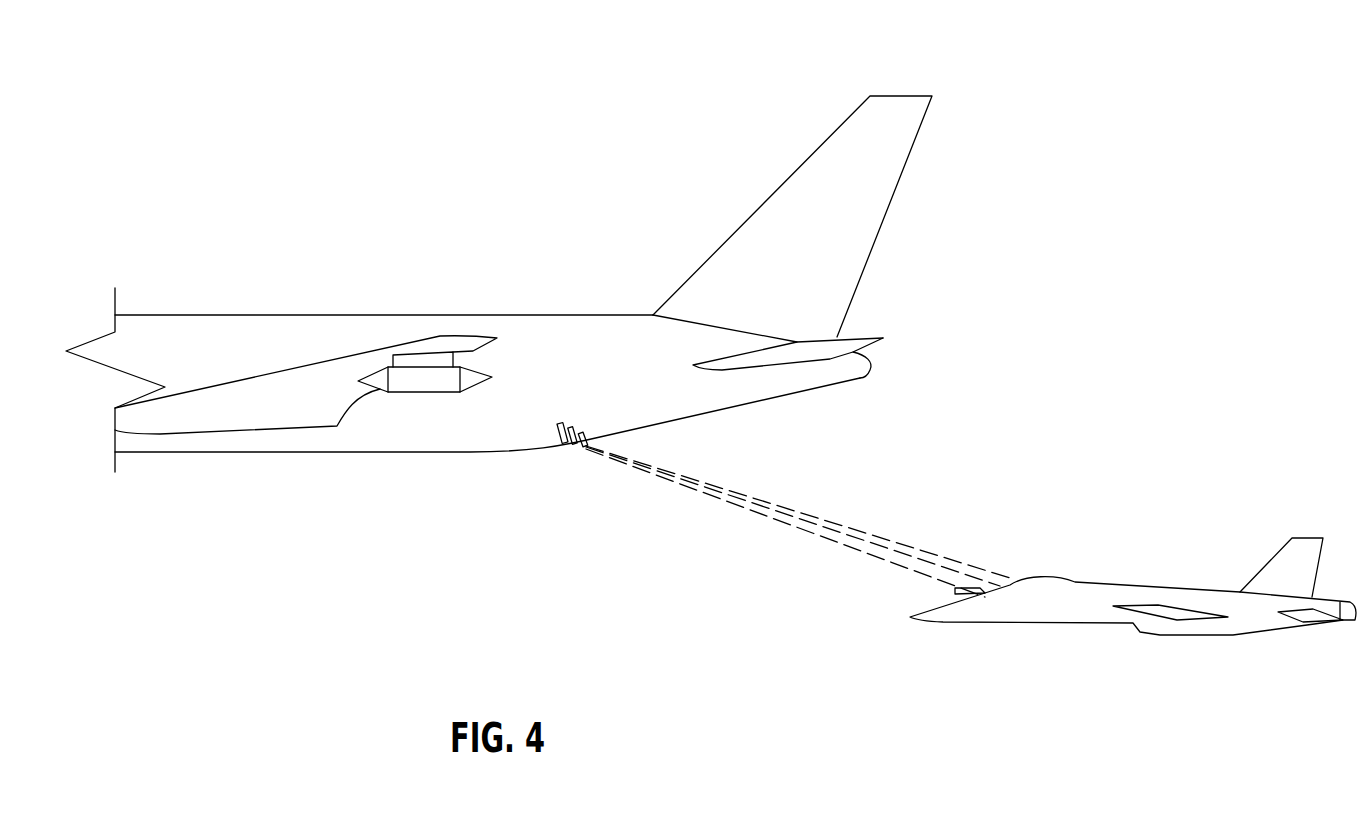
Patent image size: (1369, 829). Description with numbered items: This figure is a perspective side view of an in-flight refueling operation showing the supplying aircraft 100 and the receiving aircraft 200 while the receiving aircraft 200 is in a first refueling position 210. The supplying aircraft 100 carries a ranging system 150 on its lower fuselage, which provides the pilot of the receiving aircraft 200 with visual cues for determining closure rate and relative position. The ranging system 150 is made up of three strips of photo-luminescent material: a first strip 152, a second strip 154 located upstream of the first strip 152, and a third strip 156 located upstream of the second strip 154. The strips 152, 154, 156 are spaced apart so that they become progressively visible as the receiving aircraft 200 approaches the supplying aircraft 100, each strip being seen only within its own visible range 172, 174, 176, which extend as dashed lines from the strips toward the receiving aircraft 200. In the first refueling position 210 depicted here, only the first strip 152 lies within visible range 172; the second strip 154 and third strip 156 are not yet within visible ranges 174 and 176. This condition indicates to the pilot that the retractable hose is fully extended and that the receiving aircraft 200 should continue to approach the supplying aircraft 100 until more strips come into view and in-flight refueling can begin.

The supplying aircraft 100 is at (303, 258).
The ranging system 150 is at (576, 412).
The first strip 152 is at (580, 447).
The second strip 154 is at (570, 447).
The third strip 156 is at (560, 444).
The visible range 172 is at (857, 533).
The visible range 174 is at (802, 527).
The visible range 176 is at (753, 517).
The receiving aircraft 200 is at (1227, 515).
The first refueling position 210 is at (1122, 557).